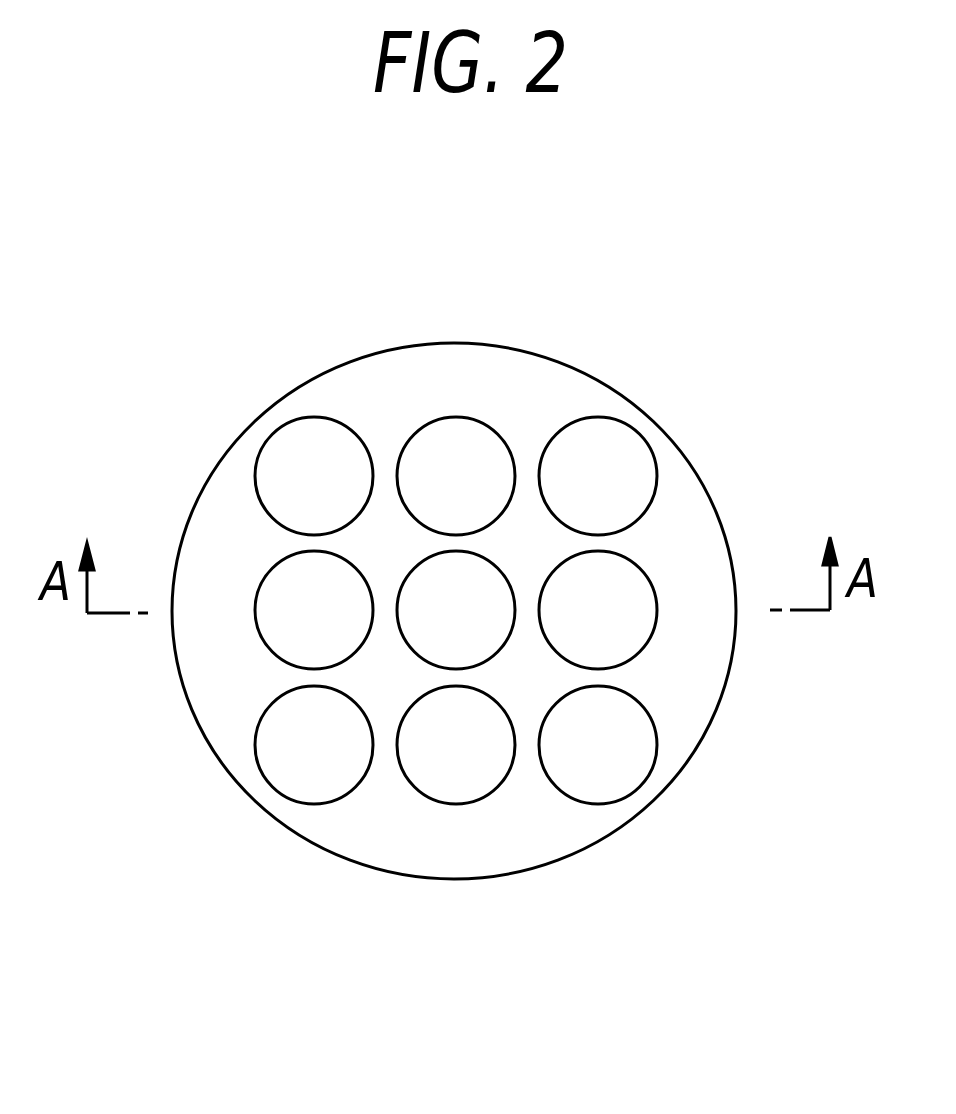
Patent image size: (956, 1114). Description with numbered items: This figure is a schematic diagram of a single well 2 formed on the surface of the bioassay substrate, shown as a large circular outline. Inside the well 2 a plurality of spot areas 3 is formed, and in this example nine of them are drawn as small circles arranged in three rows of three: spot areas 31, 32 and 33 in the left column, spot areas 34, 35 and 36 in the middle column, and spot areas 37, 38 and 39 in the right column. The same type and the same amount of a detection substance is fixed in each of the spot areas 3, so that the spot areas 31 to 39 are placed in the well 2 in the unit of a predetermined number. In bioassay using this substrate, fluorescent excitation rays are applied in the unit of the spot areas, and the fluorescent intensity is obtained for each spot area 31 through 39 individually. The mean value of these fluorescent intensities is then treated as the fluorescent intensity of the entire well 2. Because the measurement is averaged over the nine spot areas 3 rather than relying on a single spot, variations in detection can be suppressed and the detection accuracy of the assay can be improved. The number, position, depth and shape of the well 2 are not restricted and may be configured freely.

The well 2 is at (657, 421).
The spot areas 3 is at (657, 713).
The spot area 31 is at (313, 432).
The spot area 32 is at (317, 655).
The spot area 33 is at (317, 788).
The spot area 34 is at (455, 432).
The spot area 35 is at (451, 655).
The spot area 36 is at (458, 786).
The spot area 37 is at (598, 432).
The spot area 38 is at (603, 653).
The spot area 39 is at (602, 786).